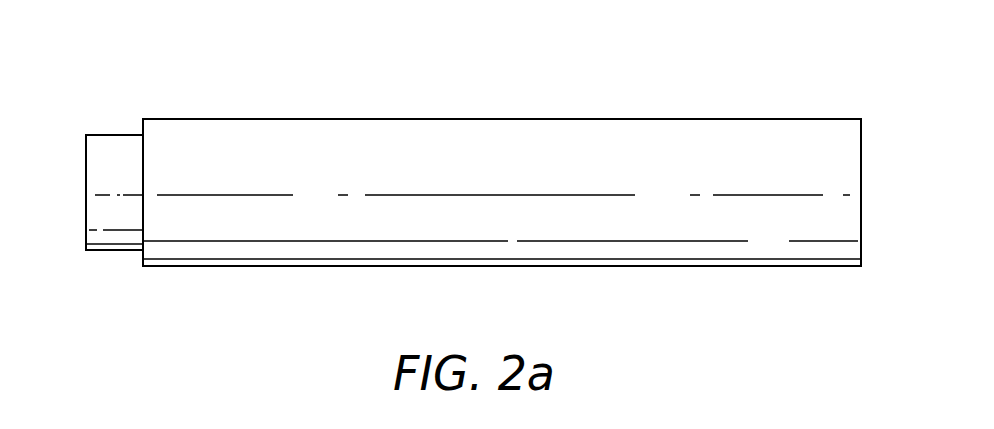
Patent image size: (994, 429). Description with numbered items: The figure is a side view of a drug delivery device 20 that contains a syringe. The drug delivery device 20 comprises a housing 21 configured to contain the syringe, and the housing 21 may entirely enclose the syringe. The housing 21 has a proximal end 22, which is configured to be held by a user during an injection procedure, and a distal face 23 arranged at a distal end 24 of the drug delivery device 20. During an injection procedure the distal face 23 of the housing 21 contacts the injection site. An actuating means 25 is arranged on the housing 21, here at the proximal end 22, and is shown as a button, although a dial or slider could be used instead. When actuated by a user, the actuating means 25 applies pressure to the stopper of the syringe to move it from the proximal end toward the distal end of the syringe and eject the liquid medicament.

The drug delivery device 20 is at (316, 74).
The housing 21 is at (485, 125).
The proximal end 22 is at (220, 263).
The distal face 23 is at (862, 190).
The distal end 24 is at (782, 266).
The actuating means 25 is at (86, 188).